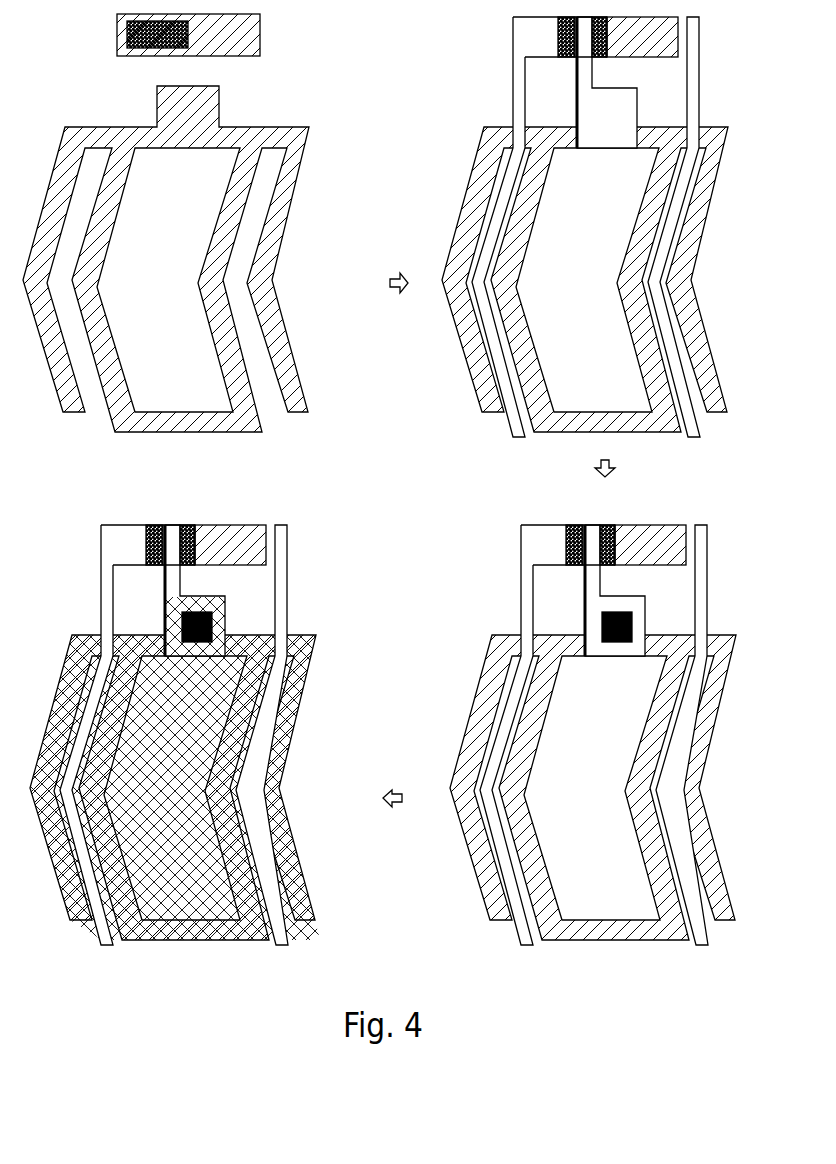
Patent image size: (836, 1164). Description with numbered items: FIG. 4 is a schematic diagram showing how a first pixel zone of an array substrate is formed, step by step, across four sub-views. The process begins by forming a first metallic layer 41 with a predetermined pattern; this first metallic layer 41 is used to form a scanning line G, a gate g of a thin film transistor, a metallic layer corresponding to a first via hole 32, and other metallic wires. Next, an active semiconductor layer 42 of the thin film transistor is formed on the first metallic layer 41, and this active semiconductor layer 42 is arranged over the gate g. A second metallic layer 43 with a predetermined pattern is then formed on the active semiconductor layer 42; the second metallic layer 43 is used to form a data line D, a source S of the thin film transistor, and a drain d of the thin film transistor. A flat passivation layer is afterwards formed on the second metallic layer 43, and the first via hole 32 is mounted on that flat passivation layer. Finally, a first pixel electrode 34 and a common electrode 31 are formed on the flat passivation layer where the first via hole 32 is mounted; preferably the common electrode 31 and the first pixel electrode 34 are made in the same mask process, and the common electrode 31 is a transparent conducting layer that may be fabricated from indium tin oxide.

The first metallic layer 41 is at (309, 268).
The active semiconductor layer 42 is at (117, 35).
The second metallic layer 43 is at (700, 48).
The first via hole 32 is at (634, 622).
The common electrode 31 is at (262, 750).
The first pixel electrode 34 is at (175, 768).
The scanning line G is at (262, 35).
The data line D is at (513, 78).
The source S is at (341, 291).
The drain d is at (405, 336).
The gate g is at (393, 291).